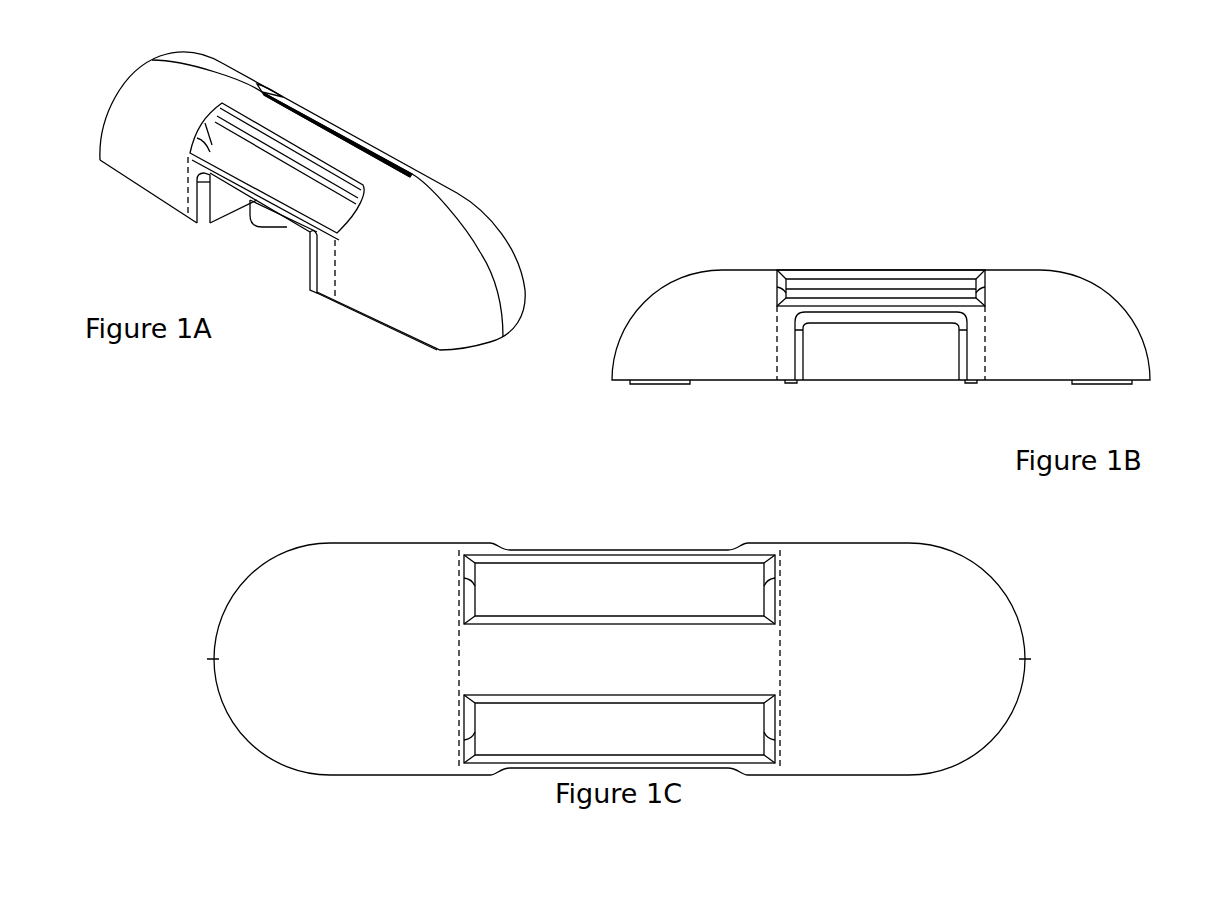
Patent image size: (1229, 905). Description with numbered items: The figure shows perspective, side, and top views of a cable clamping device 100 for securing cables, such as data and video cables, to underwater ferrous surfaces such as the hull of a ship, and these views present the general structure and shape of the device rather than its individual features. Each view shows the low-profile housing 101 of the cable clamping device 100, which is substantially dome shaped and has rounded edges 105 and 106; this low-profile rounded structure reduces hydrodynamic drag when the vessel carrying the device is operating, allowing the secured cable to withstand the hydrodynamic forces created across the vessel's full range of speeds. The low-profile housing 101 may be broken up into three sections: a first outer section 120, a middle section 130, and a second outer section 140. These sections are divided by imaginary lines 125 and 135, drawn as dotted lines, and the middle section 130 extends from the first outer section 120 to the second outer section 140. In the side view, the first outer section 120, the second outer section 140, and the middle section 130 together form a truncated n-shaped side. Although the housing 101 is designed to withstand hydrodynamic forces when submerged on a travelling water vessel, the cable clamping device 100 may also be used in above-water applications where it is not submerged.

In FIG. 1A, the cable clamping device 100 is at (362, 83).
In FIG. 1B, the cable clamping device 100 is at (891, 350).
In FIG. 1C, the cable clamping device 100 is at (334, 528).
In FIG. 1A, the low-profile housing 101 is at (466, 327).
In FIG. 1B, the low-profile housing 101 is at (756, 307).
In FIG. 1C, the low-profile housing 101 is at (630, 668).
In FIG. 1A, the rounded edge 105 is at (157, 63).
In FIG. 1B, the rounded edge 105 is at (648, 294).
In FIG. 1A, the rounded edge 106 is at (480, 252).
In FIG. 1B, the rounded edge 106 is at (1068, 270).
In FIG. 1A, the first outer section 120 is at (142, 160).
In FIG. 1B, the first outer section 120 is at (673, 343).
In FIG. 1C, the first outer section 120 is at (295, 696).
In FIG. 1A, the imaginary line 125 is at (190, 185).
In FIG. 1B, the imaginary line 125 is at (777, 352).
In FIG. 1C, the imaginary line 125 is at (459, 650).
In FIG. 1A, the middle section 130 is at (355, 143).
In FIG. 1B, the middle section 130 is at (974, 345).
In FIG. 1C, the middle section 130 is at (498, 658).
In FIG. 1A, the imaginary line 135 is at (322, 272).
In FIG. 1B, the imaginary line 135 is at (985, 348).
In FIG. 1C, the imaginary line 135 is at (780, 662).
In FIG. 1A, the second outer section 140 is at (404, 285).
In FIG. 1B, the second outer section 140 is at (1094, 314).
In FIG. 1C, the second outer section 140 is at (948, 695).